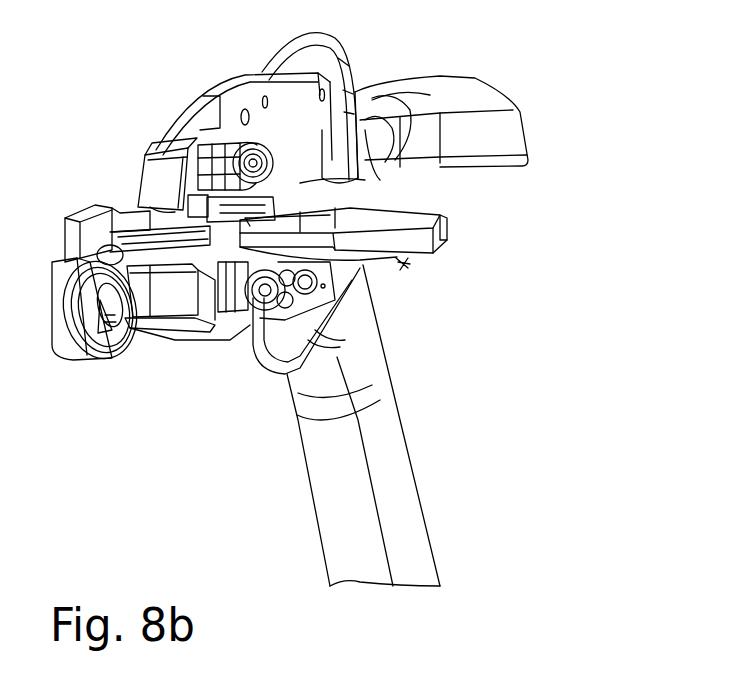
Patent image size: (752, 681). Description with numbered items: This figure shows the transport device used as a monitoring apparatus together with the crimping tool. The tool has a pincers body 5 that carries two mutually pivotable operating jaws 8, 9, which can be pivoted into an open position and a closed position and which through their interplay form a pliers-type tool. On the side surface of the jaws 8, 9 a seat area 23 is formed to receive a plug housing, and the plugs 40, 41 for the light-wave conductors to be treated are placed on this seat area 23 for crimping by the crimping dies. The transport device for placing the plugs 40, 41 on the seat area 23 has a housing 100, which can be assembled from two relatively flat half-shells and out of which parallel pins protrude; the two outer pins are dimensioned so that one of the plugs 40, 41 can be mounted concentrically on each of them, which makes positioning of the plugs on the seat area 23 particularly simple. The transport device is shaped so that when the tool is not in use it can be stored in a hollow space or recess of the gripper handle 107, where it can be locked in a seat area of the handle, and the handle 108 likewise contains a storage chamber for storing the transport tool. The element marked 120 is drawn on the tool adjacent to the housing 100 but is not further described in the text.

The pincers body 5 is at (285, 100).
The operating jaw 8 is at (162, 180).
The operating jaw 9 is at (171, 305).
The seat area 23 is at (143, 257).
The plug 40 is at (137, 163).
The plug 41 is at (123, 204).
The housing 100 is at (392, 221).
The gripper handle 107 is at (478, 92).
The handle 108 is at (400, 490).
The fastening screw 120 is at (402, 262).